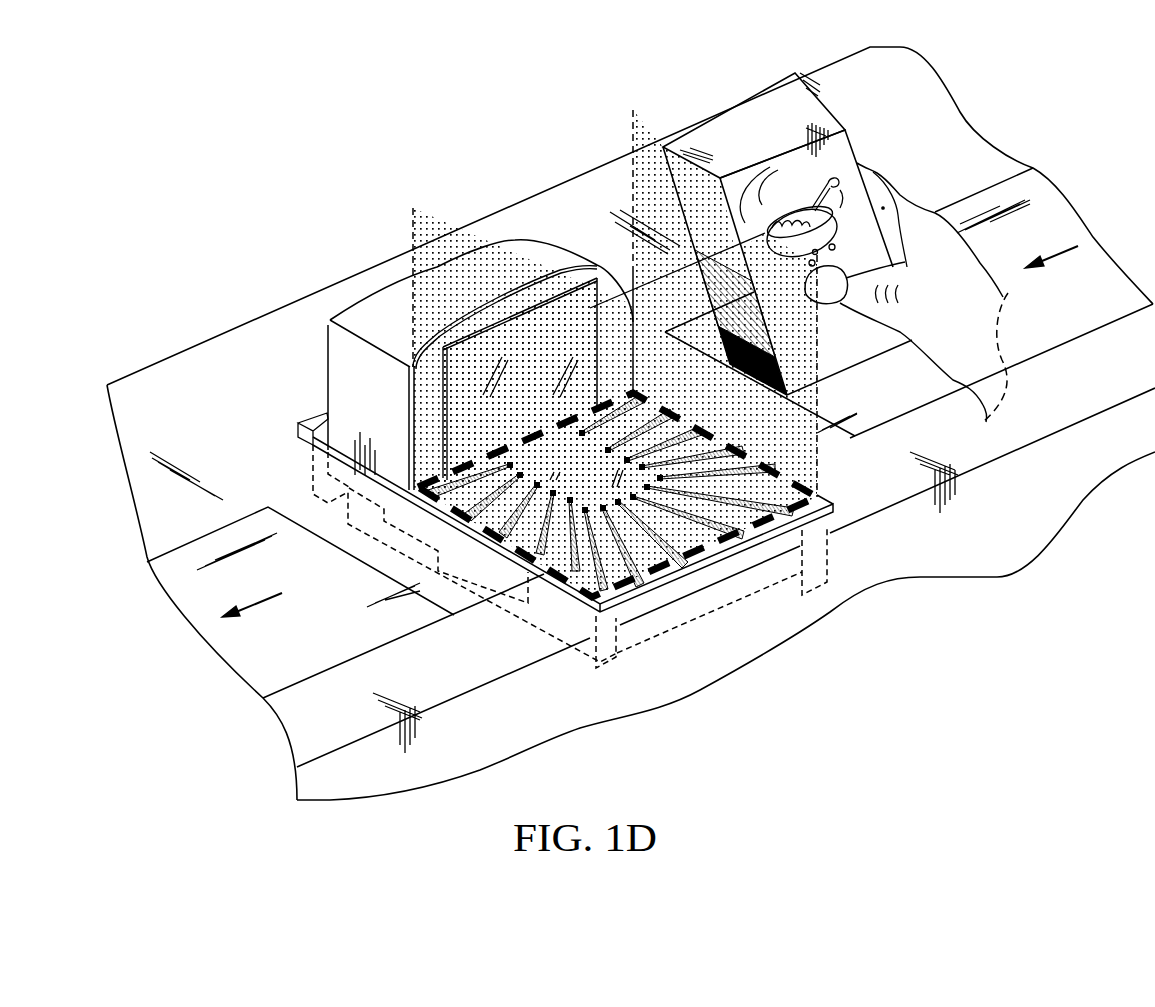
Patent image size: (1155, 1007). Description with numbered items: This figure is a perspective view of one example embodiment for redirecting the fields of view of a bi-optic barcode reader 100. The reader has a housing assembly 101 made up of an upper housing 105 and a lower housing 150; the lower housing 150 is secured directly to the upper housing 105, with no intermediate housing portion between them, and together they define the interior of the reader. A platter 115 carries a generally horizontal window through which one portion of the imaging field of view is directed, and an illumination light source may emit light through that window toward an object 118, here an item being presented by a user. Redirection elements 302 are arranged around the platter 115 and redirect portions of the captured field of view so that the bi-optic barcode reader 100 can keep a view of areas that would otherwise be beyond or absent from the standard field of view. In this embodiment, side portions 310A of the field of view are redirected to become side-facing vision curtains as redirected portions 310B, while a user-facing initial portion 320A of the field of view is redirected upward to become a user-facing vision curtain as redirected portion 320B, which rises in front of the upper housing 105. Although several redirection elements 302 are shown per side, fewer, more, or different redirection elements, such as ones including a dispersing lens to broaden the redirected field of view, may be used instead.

The bi-optic barcode reader 100 is at (492, 88).
The housing assembly 101 is at (346, 292).
The upper housing 105 is at (338, 381).
The platter 115 is at (727, 442).
The object 118 is at (847, 146).
The lower housing 150 is at (313, 470).
The redirection element 302 is at (645, 572).
The side portions of the FOV 310A is at (541, 450).
The redirected portions (side-facing vision curtains) 310B is at (466, 240).
The user-facing initial portion of the FOV 320A is at (642, 496).
The redirected portion (user-facing vision curtain) 320B is at (592, 263).